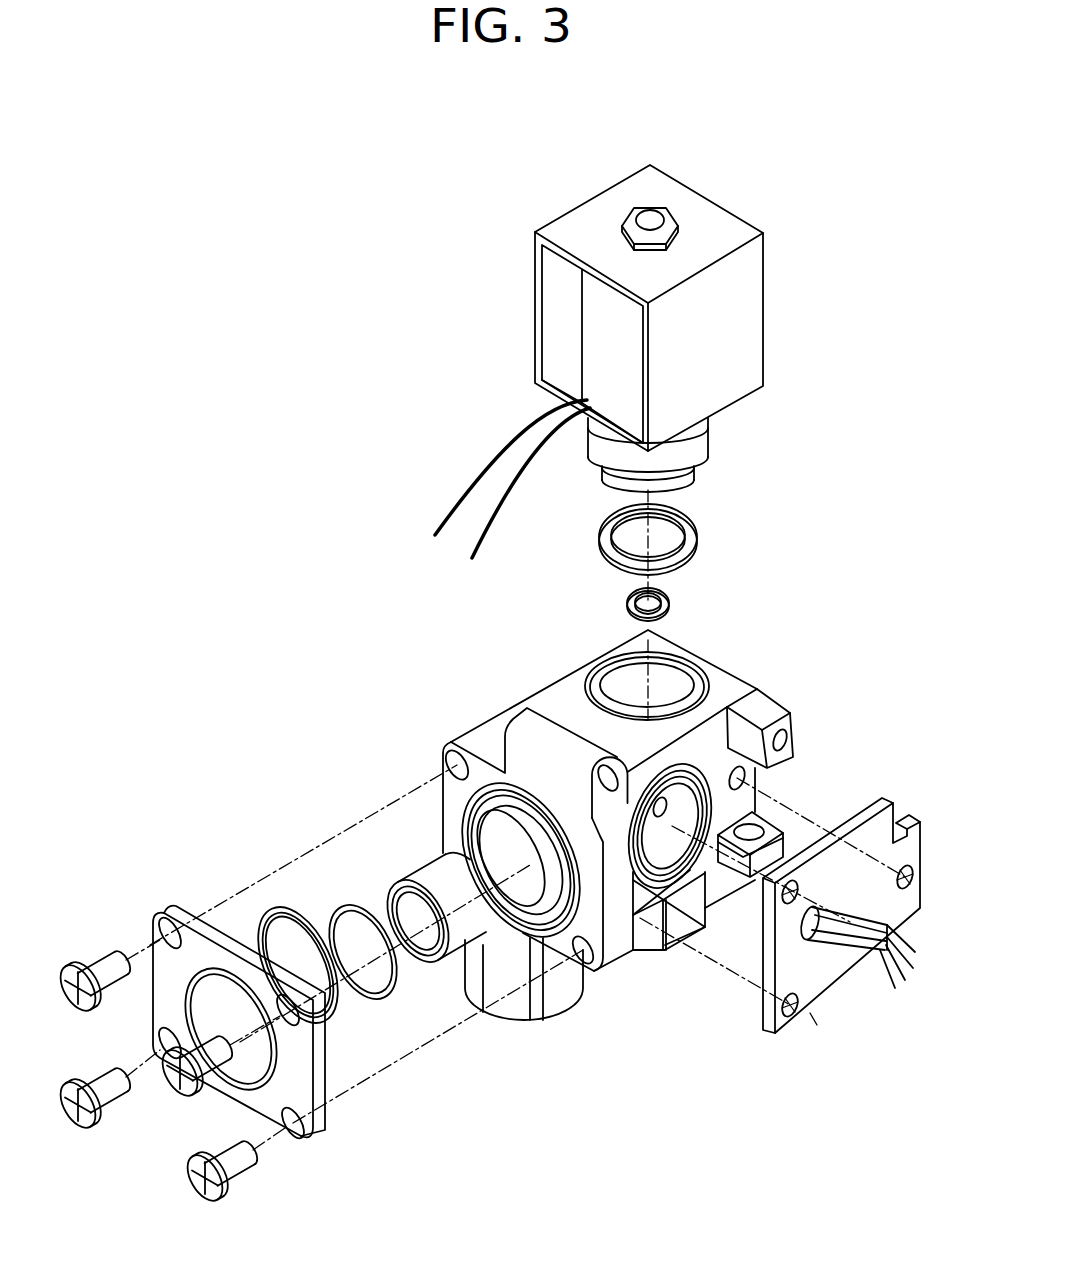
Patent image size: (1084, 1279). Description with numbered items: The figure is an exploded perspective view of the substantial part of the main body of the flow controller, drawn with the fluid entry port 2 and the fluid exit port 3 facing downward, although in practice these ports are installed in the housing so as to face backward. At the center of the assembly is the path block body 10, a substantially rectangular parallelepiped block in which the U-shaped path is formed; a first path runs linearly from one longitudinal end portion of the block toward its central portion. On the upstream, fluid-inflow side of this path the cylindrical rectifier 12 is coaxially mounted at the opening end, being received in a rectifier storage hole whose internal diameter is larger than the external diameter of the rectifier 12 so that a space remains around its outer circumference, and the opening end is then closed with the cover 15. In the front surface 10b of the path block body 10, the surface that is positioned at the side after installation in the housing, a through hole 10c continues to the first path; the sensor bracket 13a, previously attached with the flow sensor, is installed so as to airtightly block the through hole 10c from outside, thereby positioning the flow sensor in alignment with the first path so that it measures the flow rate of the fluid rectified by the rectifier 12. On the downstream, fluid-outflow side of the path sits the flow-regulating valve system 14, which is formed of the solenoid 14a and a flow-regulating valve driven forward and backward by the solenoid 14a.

The fluid entry port 2 is at (522, 1003).
The fluid exit port 3 is at (650, 933).
The path block body 10 is at (615, 796).
The front surface 10b is at (708, 735).
The through hole 10c is at (690, 873).
The cylindrical rectifier 12 is at (432, 878).
The sensor bracket 13a is at (863, 850).
The flow-regulating valve system 14 is at (650, 361).
The solenoid 14a is at (779, 364).
The cover 15 is at (195, 962).